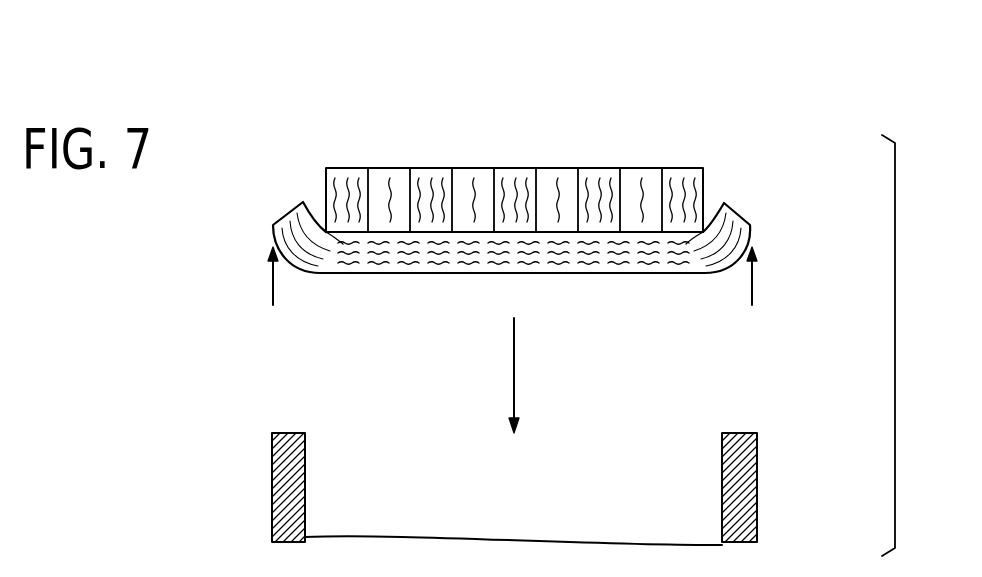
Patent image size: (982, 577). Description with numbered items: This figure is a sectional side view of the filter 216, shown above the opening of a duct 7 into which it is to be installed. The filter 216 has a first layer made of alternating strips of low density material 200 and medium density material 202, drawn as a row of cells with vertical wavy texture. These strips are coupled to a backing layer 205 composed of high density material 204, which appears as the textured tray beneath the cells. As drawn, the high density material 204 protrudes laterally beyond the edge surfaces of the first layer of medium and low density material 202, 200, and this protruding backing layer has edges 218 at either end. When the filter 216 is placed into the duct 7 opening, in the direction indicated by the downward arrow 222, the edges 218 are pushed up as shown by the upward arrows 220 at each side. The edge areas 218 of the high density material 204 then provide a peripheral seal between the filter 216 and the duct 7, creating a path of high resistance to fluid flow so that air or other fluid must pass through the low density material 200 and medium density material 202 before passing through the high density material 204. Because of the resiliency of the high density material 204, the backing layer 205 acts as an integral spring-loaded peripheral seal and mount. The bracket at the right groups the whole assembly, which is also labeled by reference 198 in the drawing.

The duct 7 is at (278, 488).
The cell assembly 198 is at (726, 160).
The low density material 200 is at (640, 175).
The medium density material 202 is at (438, 187).
The high density material 204 is at (487, 254).
The backing layer 205 is at (780, 233).
The filter 216 is at (759, 96).
The edges 218 is at (295, 218).
The arrows 220 is at (273, 283).
The arrow 222 is at (514, 373).